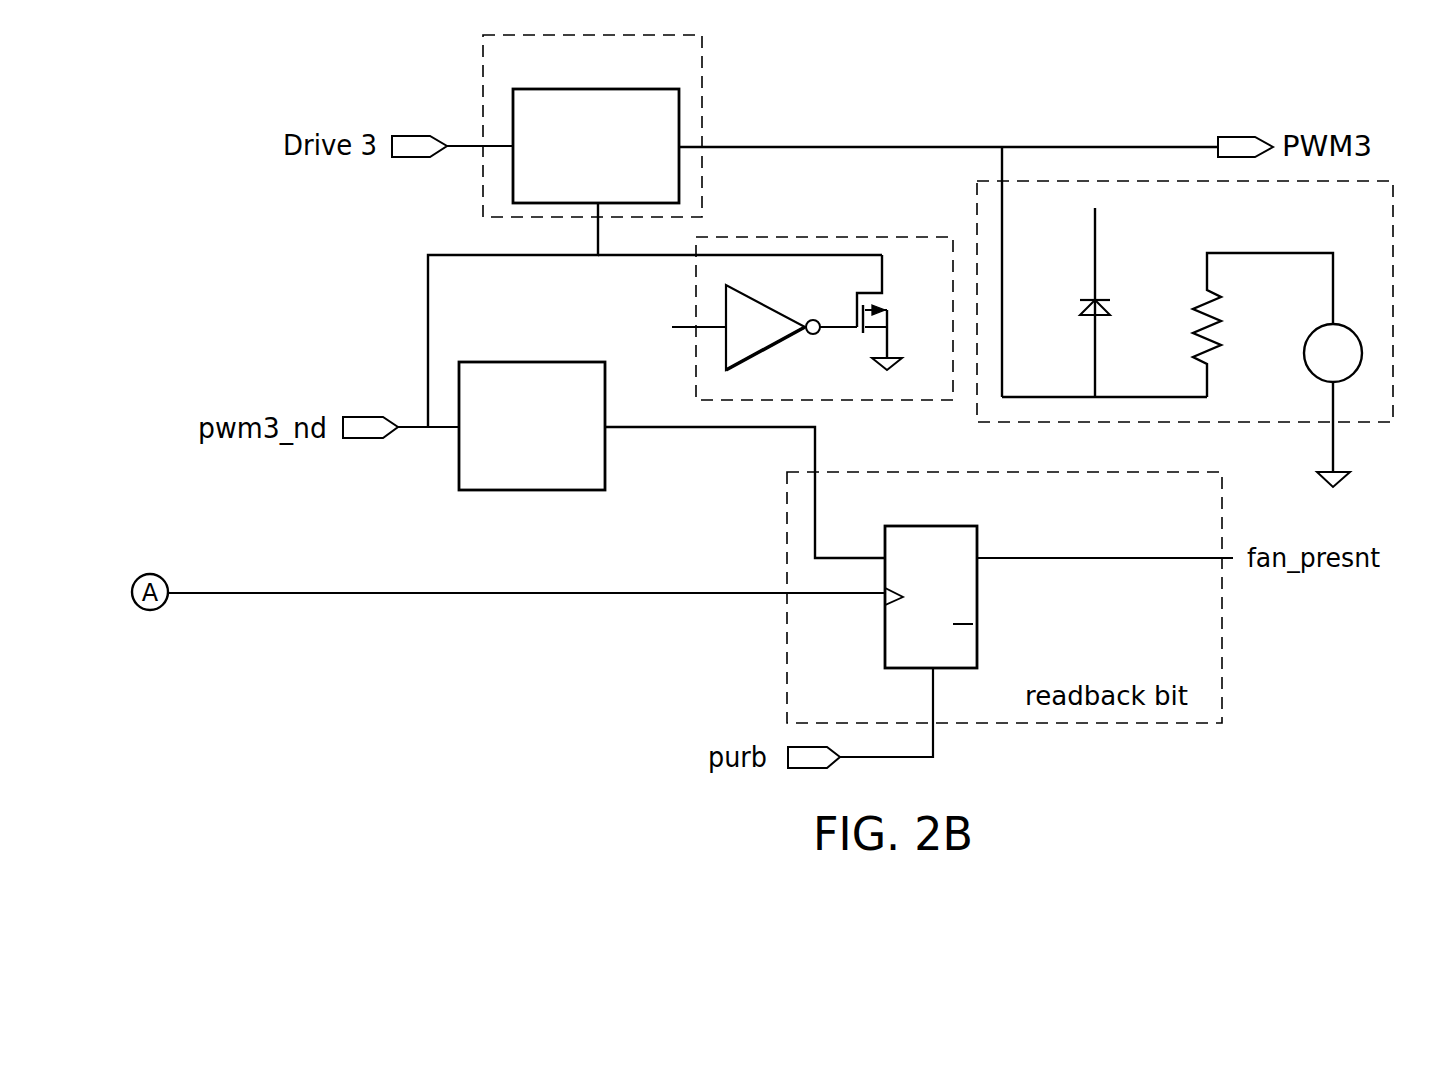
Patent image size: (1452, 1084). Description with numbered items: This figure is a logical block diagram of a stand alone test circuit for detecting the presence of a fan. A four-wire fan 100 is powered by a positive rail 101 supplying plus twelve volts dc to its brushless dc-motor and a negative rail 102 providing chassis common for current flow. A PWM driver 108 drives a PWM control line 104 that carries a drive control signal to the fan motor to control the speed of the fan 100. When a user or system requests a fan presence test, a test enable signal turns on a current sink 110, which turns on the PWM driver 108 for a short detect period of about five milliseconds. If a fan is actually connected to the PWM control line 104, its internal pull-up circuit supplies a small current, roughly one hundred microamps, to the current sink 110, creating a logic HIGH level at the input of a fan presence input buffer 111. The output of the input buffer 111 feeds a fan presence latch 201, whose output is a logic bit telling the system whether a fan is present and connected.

The PWM driver 108 is at (517, 33).
The PWM control line 104 is at (850, 146).
The current sink 110 is at (830, 236).
The four-wire fan 100 is at (1212, 289).
The positive rail 101 is at (1097, 248).
The negative rail 102 is at (1337, 450).
The fan presence input buffer 111 is at (522, 490).
The fan presence latch 201 is at (885, 640).